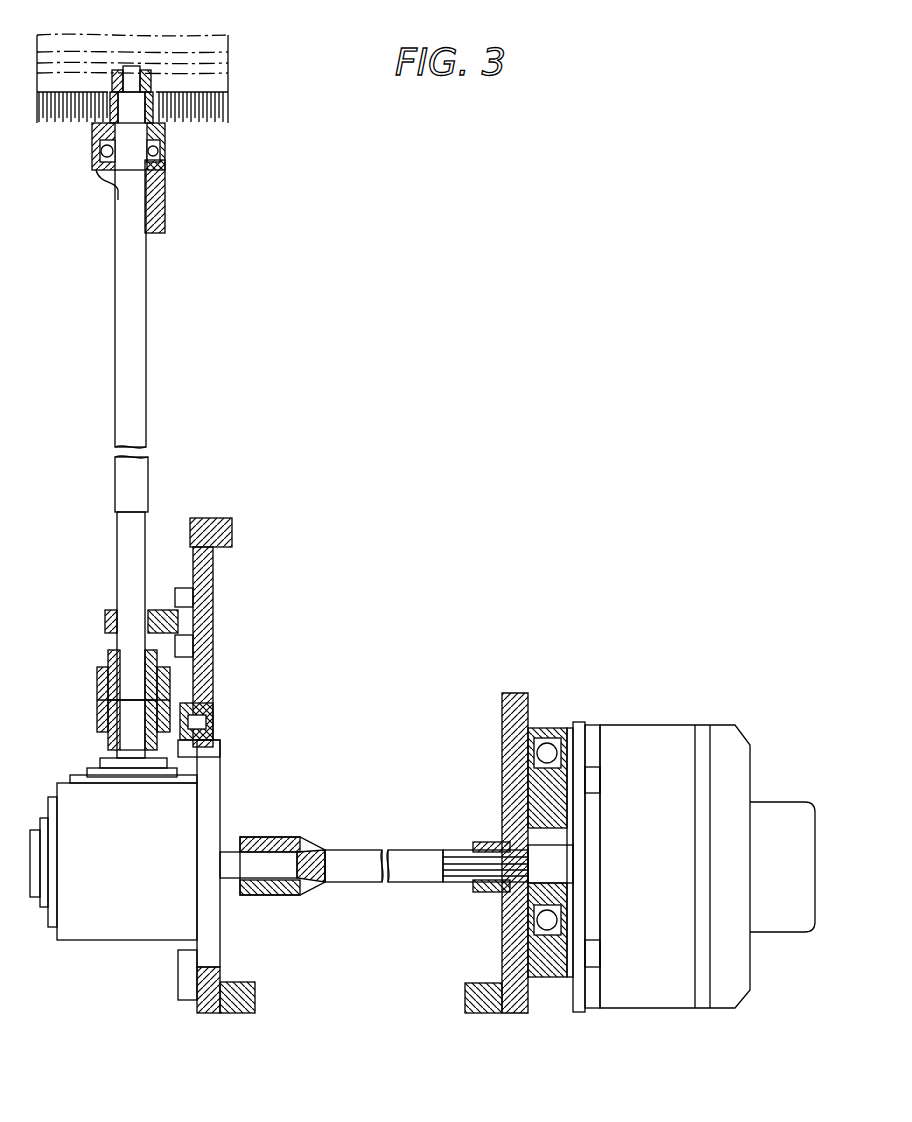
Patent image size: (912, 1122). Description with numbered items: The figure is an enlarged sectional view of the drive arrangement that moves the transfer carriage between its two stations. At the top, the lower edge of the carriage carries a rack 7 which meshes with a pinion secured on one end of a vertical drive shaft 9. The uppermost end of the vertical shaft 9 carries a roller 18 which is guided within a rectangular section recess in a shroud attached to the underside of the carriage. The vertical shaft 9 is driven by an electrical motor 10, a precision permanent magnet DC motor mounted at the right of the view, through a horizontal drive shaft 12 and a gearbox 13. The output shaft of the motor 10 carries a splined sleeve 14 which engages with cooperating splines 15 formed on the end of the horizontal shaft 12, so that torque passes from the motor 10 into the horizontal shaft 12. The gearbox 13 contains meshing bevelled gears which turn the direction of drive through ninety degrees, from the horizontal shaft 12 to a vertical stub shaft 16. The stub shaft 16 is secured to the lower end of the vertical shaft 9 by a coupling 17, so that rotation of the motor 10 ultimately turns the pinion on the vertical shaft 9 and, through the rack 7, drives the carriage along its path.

The rack 7 is at (213, 118).
The vertical drive shaft 9 is at (113, 100).
The electrical motor 10 is at (645, 742).
The horizontal drive shaft 12 is at (407, 857).
The gearbox 13 is at (105, 927).
The splined sleeve 14 is at (483, 845).
The splines 15 is at (467, 868).
The vertical stub shaft 16 is at (123, 753).
The coupling 17 is at (97, 672).
The roller 18 is at (152, 76).